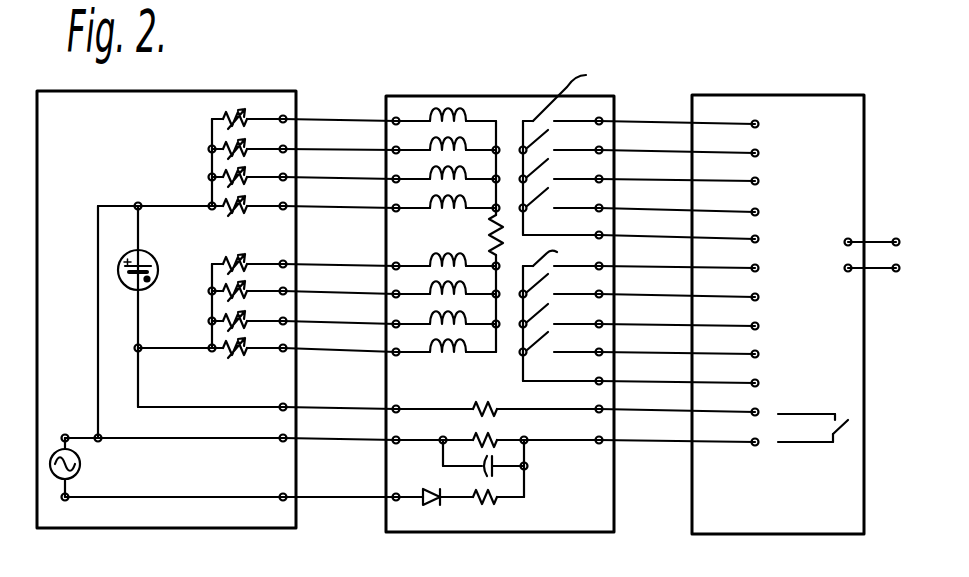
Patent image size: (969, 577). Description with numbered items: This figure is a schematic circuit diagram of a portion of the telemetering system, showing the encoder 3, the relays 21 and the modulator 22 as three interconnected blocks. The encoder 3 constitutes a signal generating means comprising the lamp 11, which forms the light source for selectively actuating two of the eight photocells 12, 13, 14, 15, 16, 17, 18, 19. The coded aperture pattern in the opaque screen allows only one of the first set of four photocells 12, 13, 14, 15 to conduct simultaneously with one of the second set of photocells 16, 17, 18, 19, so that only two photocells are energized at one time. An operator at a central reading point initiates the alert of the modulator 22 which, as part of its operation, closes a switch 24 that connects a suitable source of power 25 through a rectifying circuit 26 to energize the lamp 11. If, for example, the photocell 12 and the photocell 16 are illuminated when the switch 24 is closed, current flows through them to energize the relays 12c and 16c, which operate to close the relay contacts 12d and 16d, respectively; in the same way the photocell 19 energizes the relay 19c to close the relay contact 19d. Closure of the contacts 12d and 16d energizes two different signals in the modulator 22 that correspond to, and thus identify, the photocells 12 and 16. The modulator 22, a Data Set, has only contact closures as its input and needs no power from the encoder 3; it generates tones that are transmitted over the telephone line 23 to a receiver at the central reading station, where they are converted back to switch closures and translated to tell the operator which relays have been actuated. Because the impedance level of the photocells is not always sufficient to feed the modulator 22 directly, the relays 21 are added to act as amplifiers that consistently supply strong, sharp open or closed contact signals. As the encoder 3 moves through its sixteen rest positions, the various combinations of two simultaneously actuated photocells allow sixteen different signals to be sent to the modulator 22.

The encoder 3 is at (186, 569).
The lamp 11 is at (130, 291).
The photocell 12 is at (211, 118).
The photocell 13 is at (210, 148).
The photocell 14 is at (210, 176).
The photocell 15 is at (210, 205).
The photocell 16 is at (211, 264).
The photocell 17 is at (211, 291).
The photocell 18 is at (211, 321).
The photocell 19 is at (211, 349).
The relay 12c is at (440, 120).
The relay contact 12d is at (577, 102).
The relay 16c is at (434, 263).
The relay contact 16d is at (561, 262).
The relay 19c is at (446, 355).
The relay contact 19d is at (537, 381).
The relays 21 is at (500, 336).
The modulator 22 is at (778, 576).
The telephone line 23 is at (876, 238).
The switch 24 is at (843, 428).
The source of power 25 is at (81, 463).
The rectifying circuit 26 is at (524, 484).